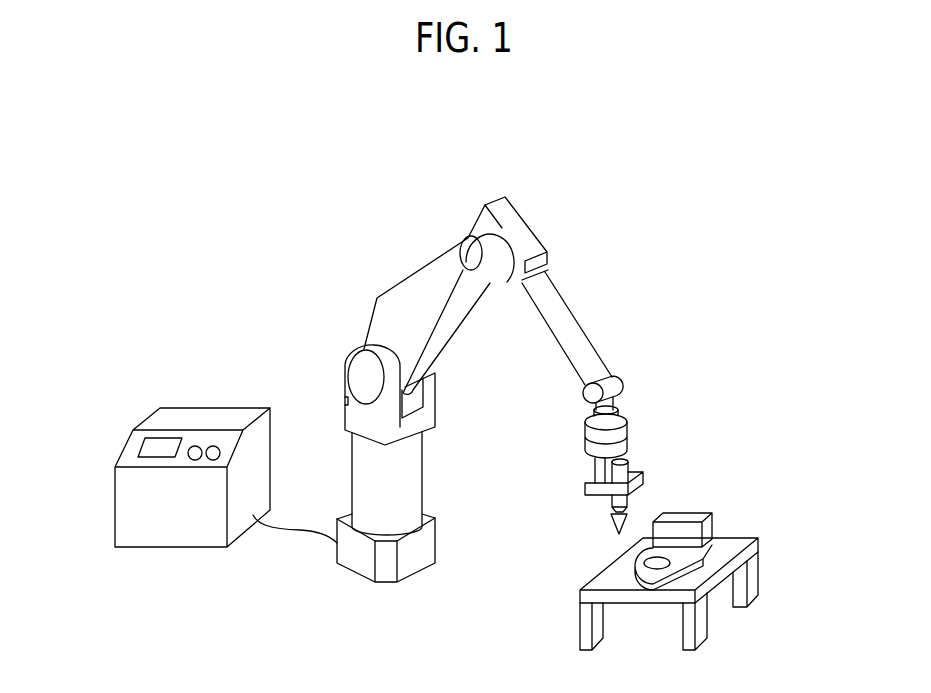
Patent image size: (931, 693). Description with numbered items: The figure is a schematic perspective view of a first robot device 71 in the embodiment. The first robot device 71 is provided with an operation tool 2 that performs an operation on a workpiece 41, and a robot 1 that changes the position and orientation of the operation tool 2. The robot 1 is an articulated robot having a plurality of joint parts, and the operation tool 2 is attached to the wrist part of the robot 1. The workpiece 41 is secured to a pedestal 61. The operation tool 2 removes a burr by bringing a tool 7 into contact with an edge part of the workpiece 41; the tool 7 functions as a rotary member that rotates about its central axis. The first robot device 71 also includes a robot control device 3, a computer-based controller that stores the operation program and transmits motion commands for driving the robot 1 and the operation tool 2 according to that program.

The robot 1 is at (422, 282).
The operation tool 2 is at (620, 448).
The robot control device 3 is at (202, 413).
The tool 7 is at (613, 523).
The workpiece 41 is at (688, 532).
The pedestal 61 is at (717, 555).
The first robot device 71 is at (547, 219).